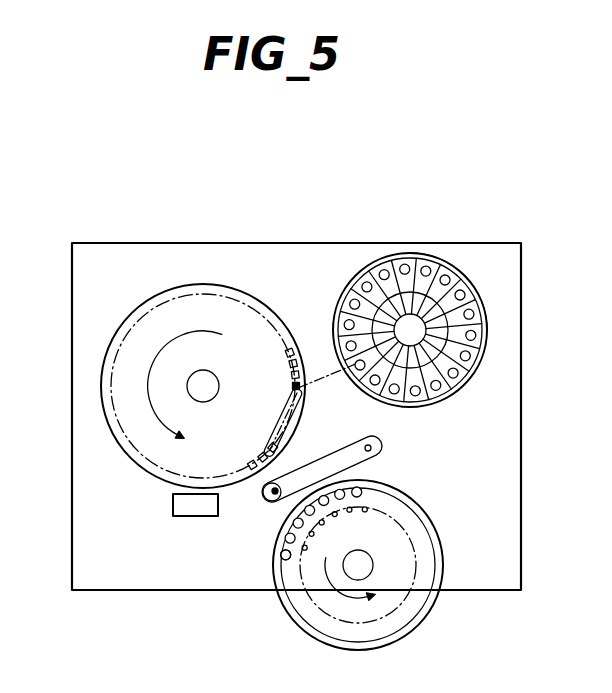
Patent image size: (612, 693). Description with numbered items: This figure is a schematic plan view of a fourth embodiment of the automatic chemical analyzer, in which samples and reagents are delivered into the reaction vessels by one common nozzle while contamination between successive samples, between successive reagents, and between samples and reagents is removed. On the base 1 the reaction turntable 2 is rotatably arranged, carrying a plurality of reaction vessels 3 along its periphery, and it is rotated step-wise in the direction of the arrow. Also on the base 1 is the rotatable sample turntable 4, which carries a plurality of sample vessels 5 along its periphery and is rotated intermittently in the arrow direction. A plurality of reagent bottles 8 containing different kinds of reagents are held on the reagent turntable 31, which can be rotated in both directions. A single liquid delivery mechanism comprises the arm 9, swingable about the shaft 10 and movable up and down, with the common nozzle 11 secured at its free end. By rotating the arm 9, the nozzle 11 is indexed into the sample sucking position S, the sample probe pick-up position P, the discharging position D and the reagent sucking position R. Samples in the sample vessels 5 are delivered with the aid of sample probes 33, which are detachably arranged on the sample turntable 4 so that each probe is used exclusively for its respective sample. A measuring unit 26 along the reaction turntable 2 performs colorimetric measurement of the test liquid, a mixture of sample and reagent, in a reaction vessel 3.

The base 1 is at (233, 243).
The reaction turntable 2 is at (176, 283).
The reaction vessel 3 is at (296, 345).
The sample turntable 4 is at (418, 622).
The sample vessel 5 is at (281, 556).
The reagent bottle 8 is at (406, 266).
The arm 9 is at (376, 465).
The shaft 10 is at (380, 446).
The nozzle 11 is at (280, 516).
The measuring unit 26 is at (173, 505).
The reagent turntable 31 is at (465, 273).
The sample probe 33 is at (304, 552).
The discharging position D is at (304, 397).
The reagent sucking position R is at (350, 388).
The sample sucking position S is at (300, 522).
The sample probe pick-up position P is at (375, 513).